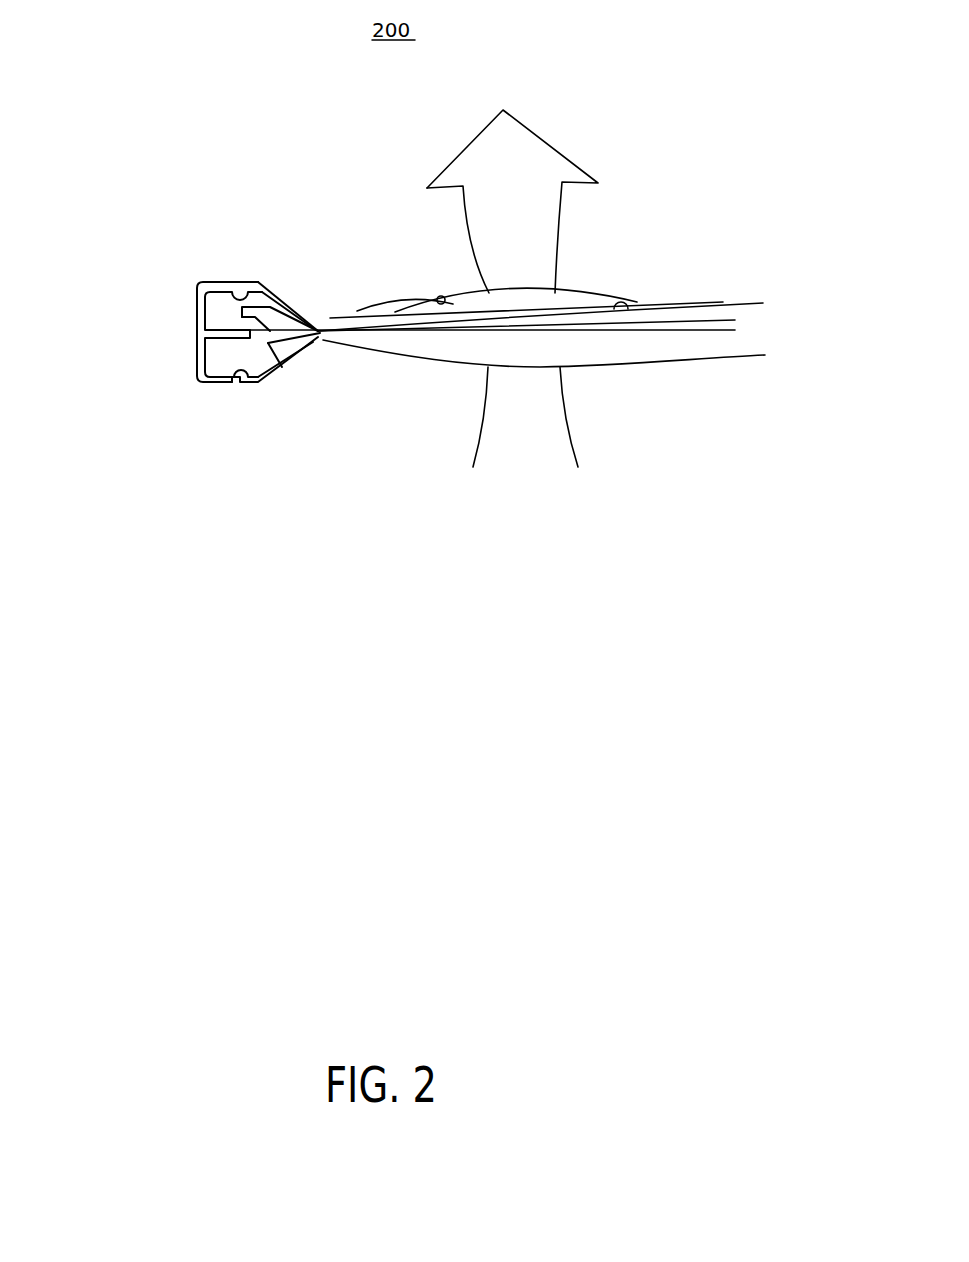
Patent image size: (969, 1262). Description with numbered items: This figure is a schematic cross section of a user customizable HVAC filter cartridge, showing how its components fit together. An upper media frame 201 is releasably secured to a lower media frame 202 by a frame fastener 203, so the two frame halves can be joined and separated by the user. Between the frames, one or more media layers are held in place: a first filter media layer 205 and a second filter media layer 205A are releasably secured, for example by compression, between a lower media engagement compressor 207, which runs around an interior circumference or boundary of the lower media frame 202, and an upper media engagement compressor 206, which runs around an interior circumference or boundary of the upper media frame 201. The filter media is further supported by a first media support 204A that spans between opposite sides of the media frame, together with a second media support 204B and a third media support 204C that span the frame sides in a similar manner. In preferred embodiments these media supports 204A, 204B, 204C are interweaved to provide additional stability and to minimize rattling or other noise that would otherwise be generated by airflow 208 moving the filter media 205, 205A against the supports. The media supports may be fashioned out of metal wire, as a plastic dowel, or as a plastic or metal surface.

The upper media frame 201 is at (223, 292).
The lower media frame 202 is at (208, 382).
The frame fastener 203 is at (200, 289).
The first media support 204A is at (440, 296).
The second media support 204B is at (562, 310).
The third media support 204C is at (627, 308).
The first filter media layer 205 is at (700, 318).
The second filter media layer 205A is at (620, 349).
The upper media engagement compressor 206 is at (282, 298).
The lower media engagement compressor 207 is at (288, 352).
The airflow 208 is at (253, 380).